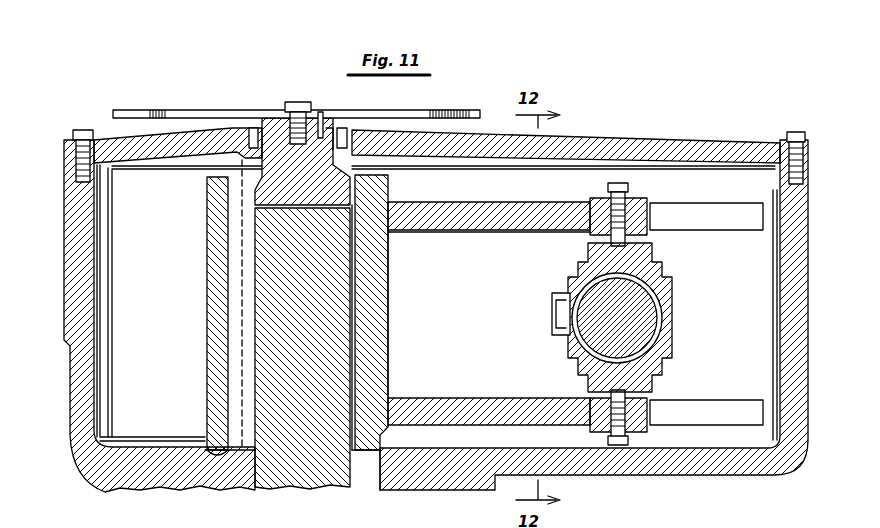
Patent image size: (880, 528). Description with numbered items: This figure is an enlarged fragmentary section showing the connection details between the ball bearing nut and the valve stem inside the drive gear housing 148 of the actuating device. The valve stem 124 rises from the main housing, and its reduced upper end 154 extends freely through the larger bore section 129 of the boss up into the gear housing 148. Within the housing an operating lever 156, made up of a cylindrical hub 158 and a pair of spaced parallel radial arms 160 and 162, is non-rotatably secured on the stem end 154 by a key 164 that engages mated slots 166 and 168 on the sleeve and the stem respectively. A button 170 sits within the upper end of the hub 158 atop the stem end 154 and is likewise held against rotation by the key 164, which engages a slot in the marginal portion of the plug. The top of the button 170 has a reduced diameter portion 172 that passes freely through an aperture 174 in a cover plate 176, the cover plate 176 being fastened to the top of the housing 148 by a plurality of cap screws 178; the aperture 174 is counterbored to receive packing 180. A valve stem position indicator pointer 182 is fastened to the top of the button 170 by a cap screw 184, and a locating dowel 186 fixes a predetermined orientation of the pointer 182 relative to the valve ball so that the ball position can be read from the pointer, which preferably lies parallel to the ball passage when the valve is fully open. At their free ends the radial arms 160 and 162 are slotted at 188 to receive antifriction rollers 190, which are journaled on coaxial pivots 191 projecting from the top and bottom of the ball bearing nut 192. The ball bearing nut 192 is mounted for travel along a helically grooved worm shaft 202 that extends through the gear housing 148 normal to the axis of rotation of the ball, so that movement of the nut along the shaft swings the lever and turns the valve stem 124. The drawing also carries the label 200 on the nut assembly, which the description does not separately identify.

The valve stem 124 is at (339, 390).
The larger bore section 129 is at (378, 460).
The drive gear housing 148 is at (600, 462).
The reduced upper end of stem 154 is at (330, 302).
The operating lever 156 is at (438, 200).
The cylindrical hub 158 is at (380, 268).
The radial arm 160 is at (470, 392).
The radial arm 162 is at (480, 230).
The key 164 is at (213, 242).
The slot 166 is at (230, 350).
The slot 168 is at (230, 407).
The button 170 is at (276, 120).
The reduced diameter portion 172 is at (328, 126).
The aperture 174 is at (252, 126).
The cover plate 176 is at (590, 150).
The cap screws 178 is at (80, 130).
The packing 180 is at (346, 126).
The valve stem position indicator pointer 182 is at (197, 112).
The cap screw 184 is at (298, 104).
The locating dowel 186 is at (320, 112).
The slot 188 is at (706, 214).
The antifriction rollers 190 is at (636, 208).
The coaxial pivots 191 is at (602, 212).
The ball bearing nut 192 is at (652, 266).
The flange 200 is at (552, 328).
The helically grooved worm shaft 202 is at (668, 308).